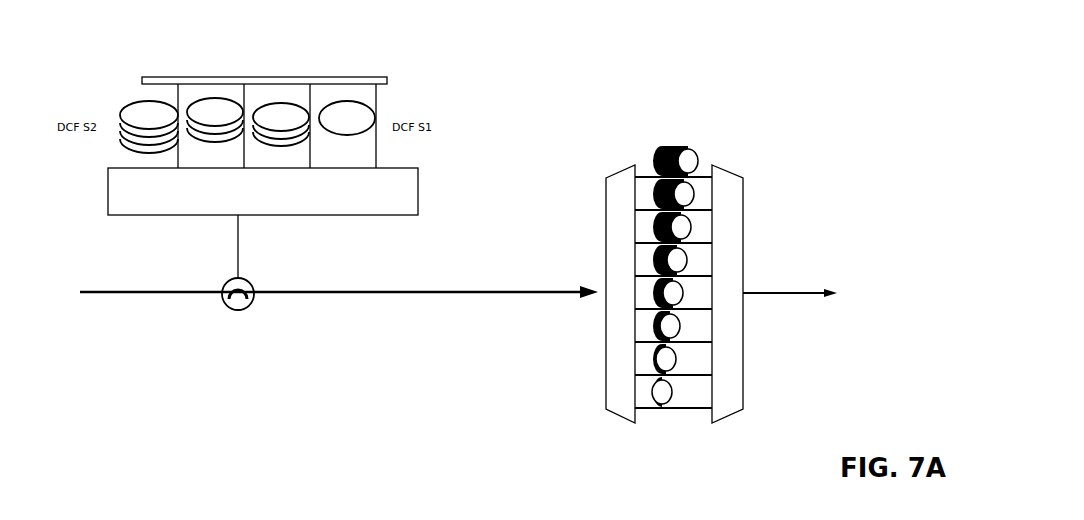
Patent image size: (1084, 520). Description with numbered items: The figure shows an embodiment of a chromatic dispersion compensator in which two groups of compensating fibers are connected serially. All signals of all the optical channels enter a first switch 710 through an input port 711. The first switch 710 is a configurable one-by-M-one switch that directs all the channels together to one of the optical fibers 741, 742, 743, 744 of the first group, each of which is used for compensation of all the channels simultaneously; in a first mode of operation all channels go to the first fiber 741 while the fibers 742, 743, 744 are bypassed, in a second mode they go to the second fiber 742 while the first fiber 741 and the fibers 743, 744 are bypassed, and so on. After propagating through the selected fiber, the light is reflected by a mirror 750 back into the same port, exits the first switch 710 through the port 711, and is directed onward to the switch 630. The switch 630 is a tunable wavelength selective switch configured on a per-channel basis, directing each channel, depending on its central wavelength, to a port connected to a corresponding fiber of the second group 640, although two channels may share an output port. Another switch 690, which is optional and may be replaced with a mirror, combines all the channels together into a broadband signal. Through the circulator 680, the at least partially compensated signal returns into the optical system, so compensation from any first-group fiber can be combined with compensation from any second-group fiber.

The mirror 750 is at (378, 77).
The optical fiber 744 is at (130, 105).
The optical fiber 743 is at (203, 100).
The second fiber 742 is at (270, 104).
The first fiber 741 is at (340, 103).
The first switch 710 is at (375, 216).
The input port 711 is at (238, 218).
The circulator 680 is at (238, 311).
The switch 630 is at (622, 418).
The fiber of the second group 640 is at (682, 120).
The switch 690 is at (730, 418).